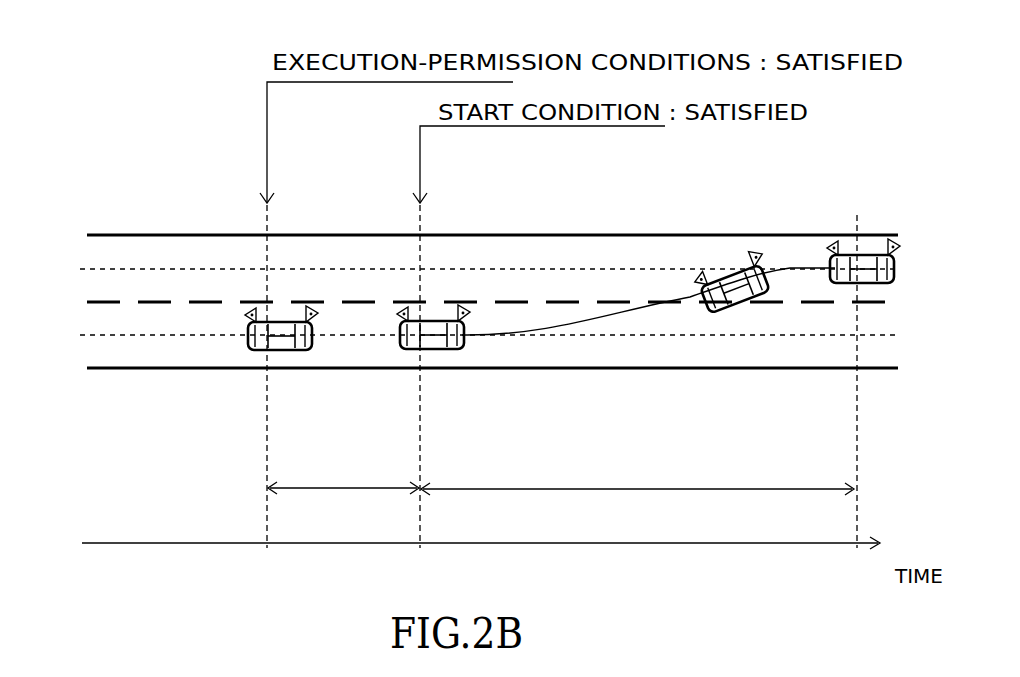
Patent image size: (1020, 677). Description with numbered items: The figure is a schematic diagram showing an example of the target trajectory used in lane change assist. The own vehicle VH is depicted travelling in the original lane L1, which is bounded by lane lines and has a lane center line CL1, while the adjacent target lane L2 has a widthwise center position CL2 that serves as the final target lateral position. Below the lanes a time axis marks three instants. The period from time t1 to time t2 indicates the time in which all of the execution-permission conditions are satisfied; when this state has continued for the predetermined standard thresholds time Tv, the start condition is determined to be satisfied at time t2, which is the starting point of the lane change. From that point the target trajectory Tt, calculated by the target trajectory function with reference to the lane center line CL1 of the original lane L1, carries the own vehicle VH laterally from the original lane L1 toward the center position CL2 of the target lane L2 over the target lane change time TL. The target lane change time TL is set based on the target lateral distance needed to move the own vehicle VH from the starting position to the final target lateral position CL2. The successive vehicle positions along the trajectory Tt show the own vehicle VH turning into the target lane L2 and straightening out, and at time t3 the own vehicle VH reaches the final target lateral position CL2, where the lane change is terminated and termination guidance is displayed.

The own vehicle VH is at (298, 350).
The original lane L1 is at (650, 353).
The target lane L2 is at (666, 248).
The lane center line of original lane CL1 is at (465, 338).
The widthwise center position of target lane CL2 is at (465, 275).
The target trajectory Tt is at (523, 328).
The standard thresholds time Tv is at (343, 476).
The target lane change time TL is at (637, 476).
The time at which execution-permission conditions are satisfied t1 is at (267, 391).
The time at which start condition is satisfied t2 is at (417, 391).
The time at which lane change is terminated t3 is at (857, 396).